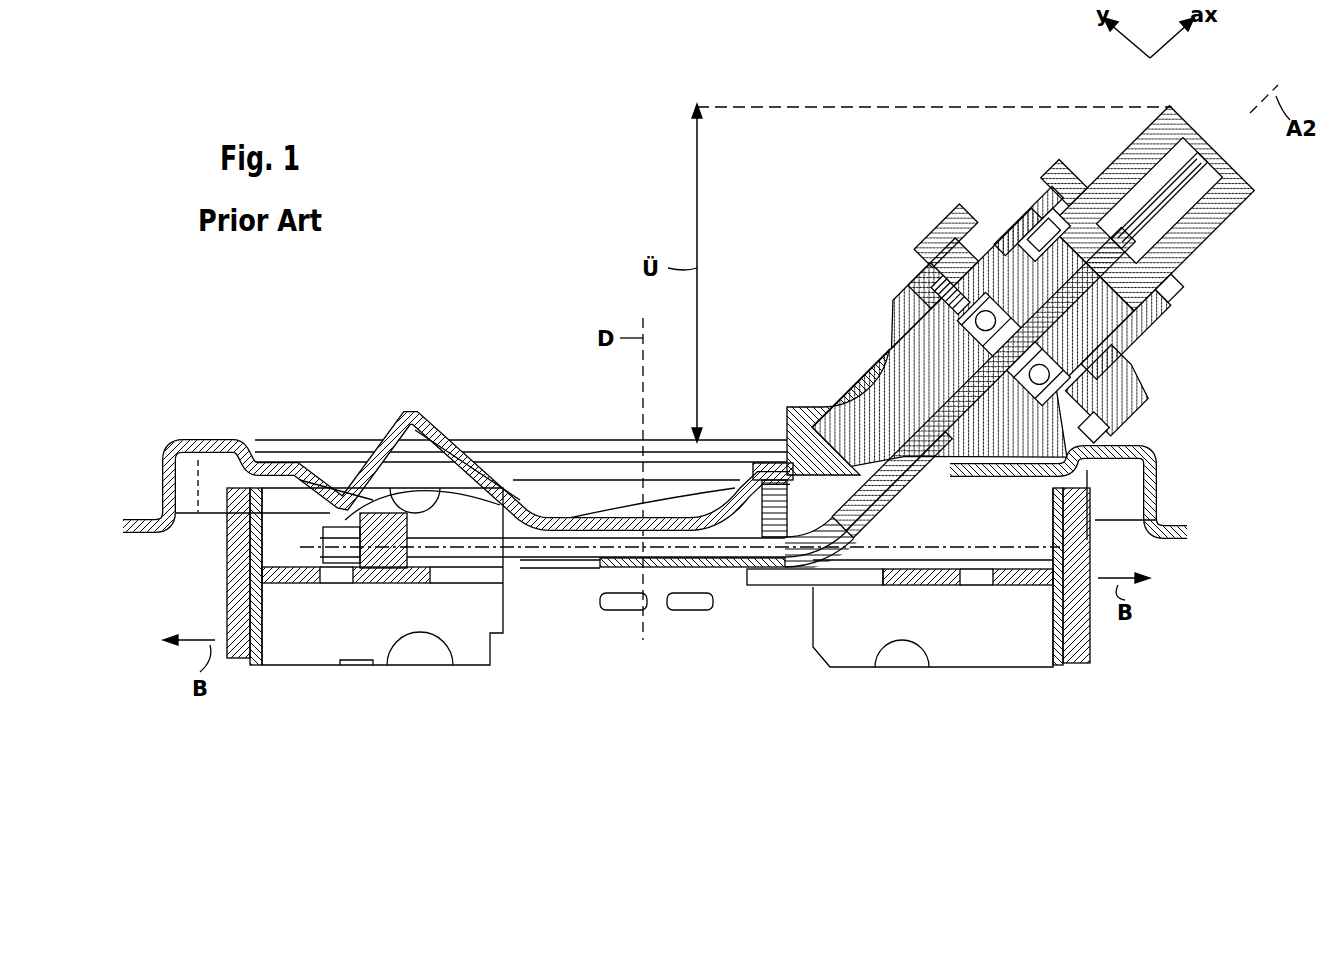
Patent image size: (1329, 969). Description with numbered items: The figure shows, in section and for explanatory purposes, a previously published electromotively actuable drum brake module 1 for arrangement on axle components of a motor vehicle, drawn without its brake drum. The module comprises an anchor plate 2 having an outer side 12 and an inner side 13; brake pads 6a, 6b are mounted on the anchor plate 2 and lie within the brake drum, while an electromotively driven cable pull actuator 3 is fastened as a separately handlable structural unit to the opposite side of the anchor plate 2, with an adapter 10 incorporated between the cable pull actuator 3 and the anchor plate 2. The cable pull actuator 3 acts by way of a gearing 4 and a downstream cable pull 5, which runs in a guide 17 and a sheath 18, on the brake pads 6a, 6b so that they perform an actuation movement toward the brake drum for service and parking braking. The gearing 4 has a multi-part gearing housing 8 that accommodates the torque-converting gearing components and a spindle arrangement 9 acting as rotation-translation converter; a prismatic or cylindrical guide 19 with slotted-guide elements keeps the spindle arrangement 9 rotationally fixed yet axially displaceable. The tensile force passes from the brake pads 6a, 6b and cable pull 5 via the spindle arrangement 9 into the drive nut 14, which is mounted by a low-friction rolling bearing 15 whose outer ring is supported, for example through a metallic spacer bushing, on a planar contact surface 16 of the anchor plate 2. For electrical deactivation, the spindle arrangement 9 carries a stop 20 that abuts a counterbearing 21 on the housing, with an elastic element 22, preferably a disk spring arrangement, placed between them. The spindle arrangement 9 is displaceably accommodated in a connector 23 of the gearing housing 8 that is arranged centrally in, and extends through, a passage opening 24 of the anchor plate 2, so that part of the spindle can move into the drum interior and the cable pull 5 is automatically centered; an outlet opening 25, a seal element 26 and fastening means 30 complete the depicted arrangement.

The drum brake module 1 is at (538, 312).
The anchor plate 2 is at (205, 452).
The cable pull actuator 3 is at (953, 180).
The gearing 4 is at (948, 228).
The cable pull 5 is at (590, 540).
The brake pad 6a is at (255, 618).
The brake pad 6b is at (1057, 640).
The gearing housing 8 is at (1168, 390).
The spindle arrangement 9 is at (1125, 340).
The adapter 10 is at (830, 430).
The outer side 12 is at (290, 460).
The inner side 13 is at (198, 458).
The drive nut 14 is at (1053, 195).
The bearing 15 is at (918, 278).
The contact surface 16 is at (1105, 403).
The guide 17 is at (680, 562).
The sheath 18 is at (715, 520).
The guide 19 is at (1205, 160).
The stop 20 is at (1170, 270).
The counterbearing 21 is at (1002, 232).
The elastic element 22 is at (1022, 215).
The connector 23 is at (920, 395).
The passage opening 24 is at (967, 467).
The outlet opening 25 is at (875, 530).
The seal element 26 is at (880, 540).
The fastening means 30 is at (903, 303).